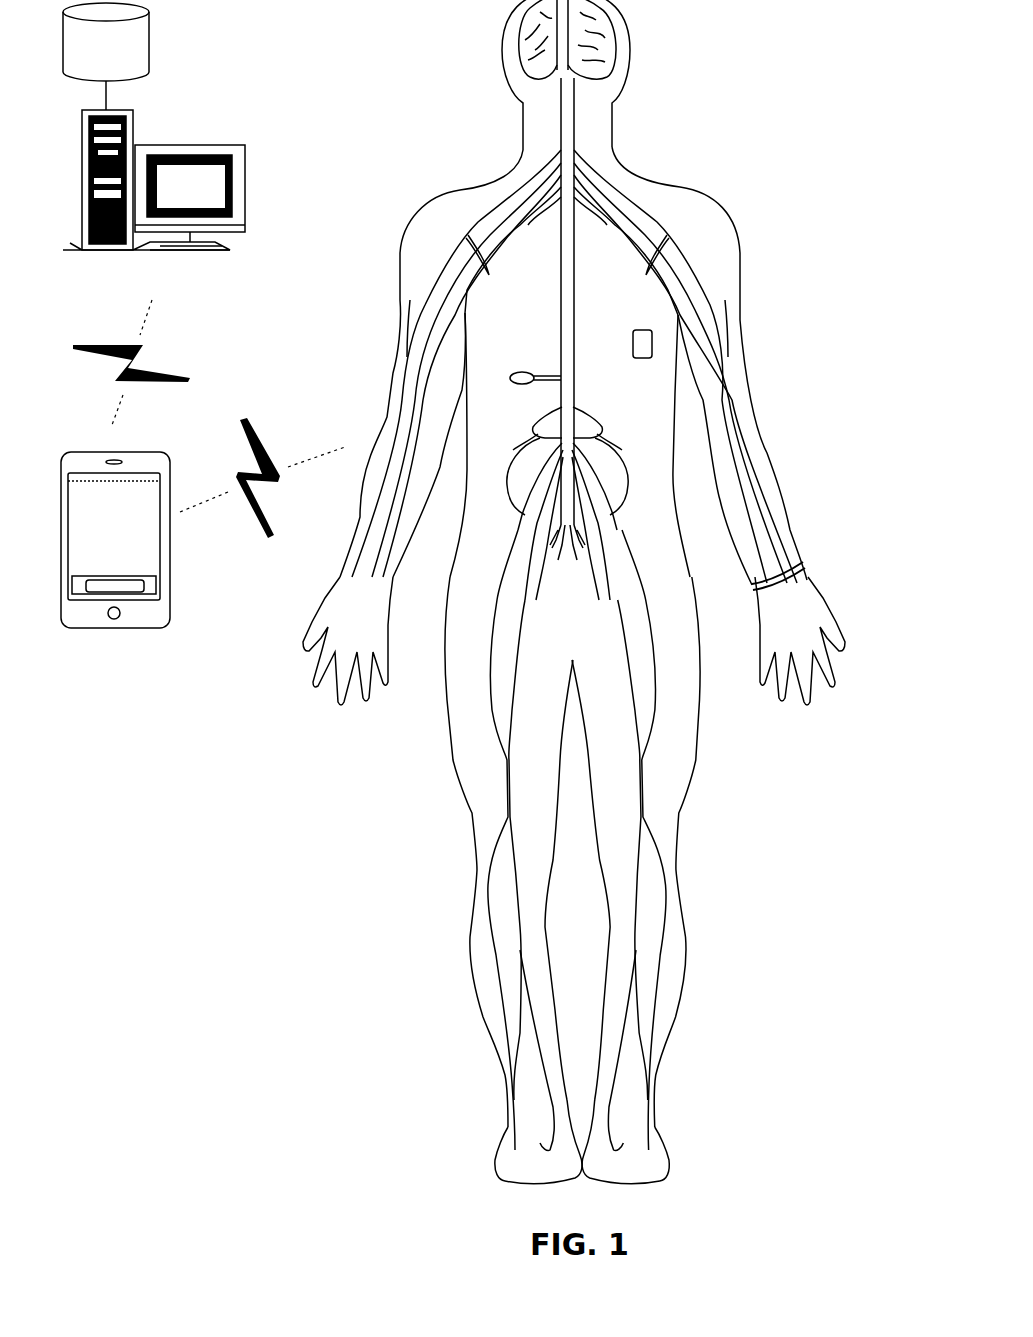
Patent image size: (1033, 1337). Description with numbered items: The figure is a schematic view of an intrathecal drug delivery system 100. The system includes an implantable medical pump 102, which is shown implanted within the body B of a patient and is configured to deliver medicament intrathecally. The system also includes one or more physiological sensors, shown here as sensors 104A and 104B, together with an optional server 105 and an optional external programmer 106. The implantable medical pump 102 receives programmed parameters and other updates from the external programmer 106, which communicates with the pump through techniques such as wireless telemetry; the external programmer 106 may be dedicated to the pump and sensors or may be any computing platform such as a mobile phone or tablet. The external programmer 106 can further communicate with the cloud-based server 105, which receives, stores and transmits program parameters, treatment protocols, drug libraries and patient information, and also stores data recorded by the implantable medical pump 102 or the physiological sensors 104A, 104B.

The intrathecal drug delivery system 100 is at (748, 82).
The implantable medical pump 102 is at (510, 372).
The physiological sensor 104A is at (652, 338).
The physiological sensor 104B is at (800, 562).
The server 105 is at (178, 145).
The external programmer 106 is at (145, 462).
The body B is at (450, 182).